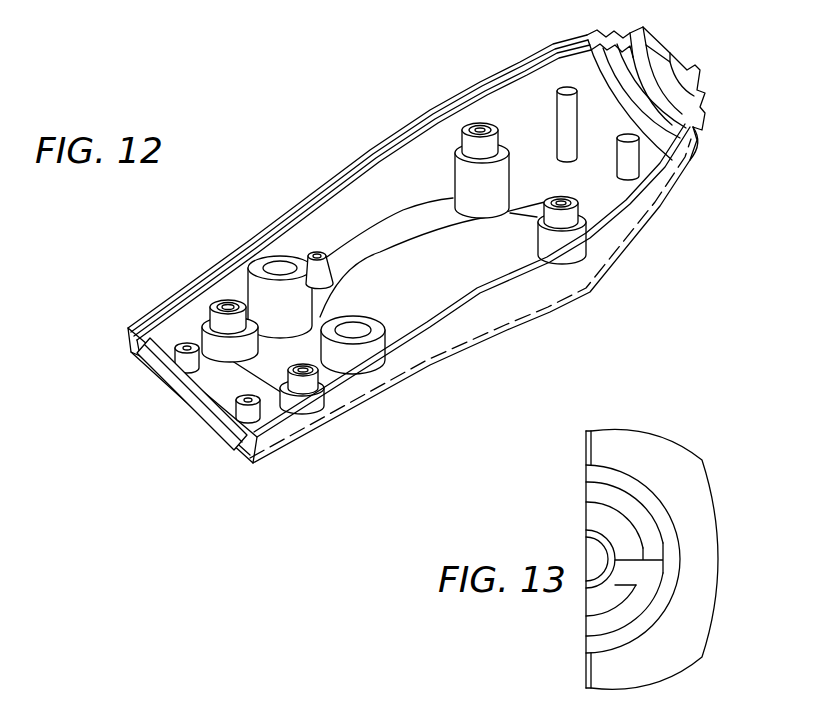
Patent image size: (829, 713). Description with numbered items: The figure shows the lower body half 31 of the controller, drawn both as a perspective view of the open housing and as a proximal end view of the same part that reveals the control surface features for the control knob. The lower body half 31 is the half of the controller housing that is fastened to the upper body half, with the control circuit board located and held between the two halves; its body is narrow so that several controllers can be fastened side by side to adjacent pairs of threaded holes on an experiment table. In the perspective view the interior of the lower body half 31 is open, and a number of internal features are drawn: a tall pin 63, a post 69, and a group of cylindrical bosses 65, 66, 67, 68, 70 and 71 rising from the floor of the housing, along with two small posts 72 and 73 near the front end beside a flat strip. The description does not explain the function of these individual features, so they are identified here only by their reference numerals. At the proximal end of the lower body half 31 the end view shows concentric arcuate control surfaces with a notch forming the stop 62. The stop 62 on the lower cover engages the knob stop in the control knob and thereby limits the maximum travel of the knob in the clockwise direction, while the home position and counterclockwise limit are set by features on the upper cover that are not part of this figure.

In FIG. 12, the lower body half 31 is at (552, 297).
In FIG. 12, the stop 62 is at (639, 137).
In FIG. 13, the stop 62 is at (657, 560).
In FIG. 12, the guide pin 63 is at (566, 88).
In FIG. 12, the mounting boss 65 is at (575, 204).
In FIG. 12, the mounting boss 66 is at (478, 128).
In FIG. 12, the ring boss 67 is at (378, 328).
In FIG. 12, the cylindrical boss 68 is at (268, 262).
In FIG. 12, the small post 69 is at (315, 254).
In FIG. 12, the mounting boss 70 is at (303, 372).
In FIG. 12, the mounting boss 71 is at (222, 306).
In FIG. 12, the front post 72 is at (247, 398).
In FIG. 12, the front post 73 is at (186, 350).